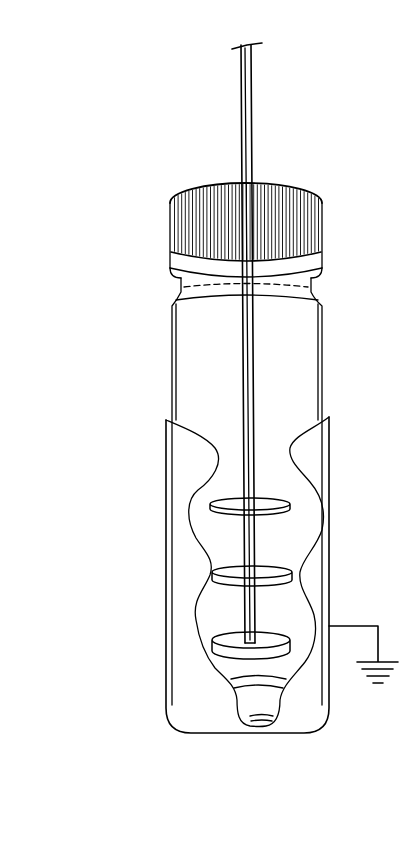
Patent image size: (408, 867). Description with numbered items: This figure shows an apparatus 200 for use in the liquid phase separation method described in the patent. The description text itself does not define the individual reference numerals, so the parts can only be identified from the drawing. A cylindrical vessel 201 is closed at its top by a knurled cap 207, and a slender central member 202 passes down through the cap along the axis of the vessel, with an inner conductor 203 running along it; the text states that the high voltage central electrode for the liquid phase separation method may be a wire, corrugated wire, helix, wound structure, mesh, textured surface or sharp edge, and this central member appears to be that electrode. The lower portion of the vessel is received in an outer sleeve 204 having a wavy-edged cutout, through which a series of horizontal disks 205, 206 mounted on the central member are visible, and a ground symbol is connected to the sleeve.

The sample preparation apparatus 200 is at (132, 168).
The container 201 is at (172, 360).
The shaft 202 is at (252, 318).
The conductor rod 203 is at (242, 405).
The sleeve 204 is at (166, 494).
The electrode disk 205 is at (222, 530).
The electrode disk 206 is at (200, 652).
The cap 207 is at (310, 190).